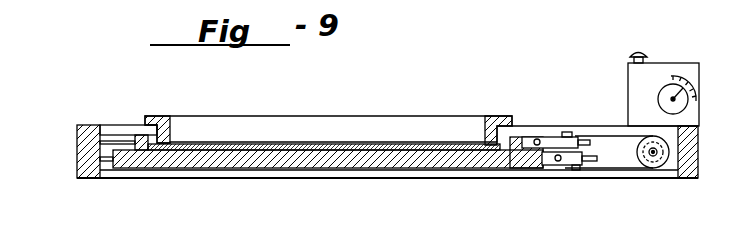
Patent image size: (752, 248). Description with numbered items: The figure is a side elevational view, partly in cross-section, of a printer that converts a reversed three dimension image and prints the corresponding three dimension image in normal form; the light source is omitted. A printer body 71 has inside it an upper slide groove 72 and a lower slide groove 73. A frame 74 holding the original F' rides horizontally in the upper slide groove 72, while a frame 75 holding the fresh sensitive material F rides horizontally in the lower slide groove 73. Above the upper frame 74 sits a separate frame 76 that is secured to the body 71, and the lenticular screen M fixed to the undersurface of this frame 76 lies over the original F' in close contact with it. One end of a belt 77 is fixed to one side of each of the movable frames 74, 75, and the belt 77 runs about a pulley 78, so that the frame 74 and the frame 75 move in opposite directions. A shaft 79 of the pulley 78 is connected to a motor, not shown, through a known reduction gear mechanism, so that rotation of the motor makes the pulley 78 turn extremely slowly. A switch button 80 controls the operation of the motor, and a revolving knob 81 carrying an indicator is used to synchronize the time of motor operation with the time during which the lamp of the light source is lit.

The printer body 71 is at (78, 156).
The upper slide groove 72 is at (103, 145).
The lower slide groove 73 is at (106, 160).
The frame 74 is at (523, 148).
The frame 75 is at (527, 165).
The separate frame 76 is at (500, 138).
The belt 77 is at (603, 168).
The pulley 78 is at (651, 168).
The shaft 79 is at (637, 162).
The switch button 80 is at (640, 50).
The revolving knob 81 is at (673, 80).
The fresh sensitive material F is at (328, 189).
The original F' is at (324, 117).
The lenticular screen M is at (387, 142).